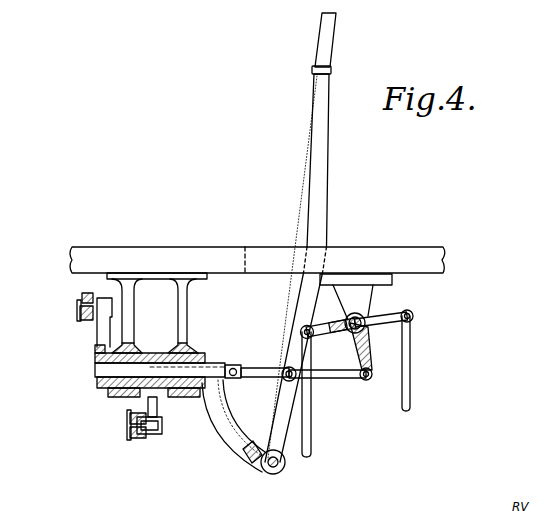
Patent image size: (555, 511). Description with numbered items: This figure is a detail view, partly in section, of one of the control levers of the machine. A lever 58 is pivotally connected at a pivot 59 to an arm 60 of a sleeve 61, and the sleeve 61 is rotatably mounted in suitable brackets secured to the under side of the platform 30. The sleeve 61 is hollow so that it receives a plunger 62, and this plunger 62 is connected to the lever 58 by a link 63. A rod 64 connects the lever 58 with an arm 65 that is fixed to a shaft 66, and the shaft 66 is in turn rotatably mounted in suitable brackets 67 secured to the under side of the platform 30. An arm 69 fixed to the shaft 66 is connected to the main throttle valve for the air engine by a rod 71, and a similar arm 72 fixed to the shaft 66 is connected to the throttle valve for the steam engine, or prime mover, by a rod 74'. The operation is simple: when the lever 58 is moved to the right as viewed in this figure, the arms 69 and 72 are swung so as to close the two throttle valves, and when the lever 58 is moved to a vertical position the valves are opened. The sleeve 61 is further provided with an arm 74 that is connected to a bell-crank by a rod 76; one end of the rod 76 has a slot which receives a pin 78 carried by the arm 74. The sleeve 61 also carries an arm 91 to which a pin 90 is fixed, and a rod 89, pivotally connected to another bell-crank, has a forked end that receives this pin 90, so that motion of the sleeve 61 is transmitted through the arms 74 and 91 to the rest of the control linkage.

The platform 30 is at (205, 247).
The lever 58 is at (320, 160).
The pivot 59 is at (276, 466).
The arm 60 is at (222, 440).
The sleeve 61 is at (207, 352).
The plunger 62 is at (98, 373).
The link 63 is at (245, 368).
The rod 64 is at (345, 382).
The arm 65 is at (369, 356).
The shaft 66 is at (338, 326).
The brackets 67 is at (361, 300).
The arm 69 is at (406, 309).
The rod 71 is at (408, 386).
The arm 72 is at (333, 335).
The arm 74 is at (82, 325).
The rod 74' is at (330, 394).
The rod 76 is at (88, 292).
The pin 78 is at (80, 312).
The rod 89 is at (140, 438).
The pin 90 is at (133, 428).
The arm 91 is at (158, 406).